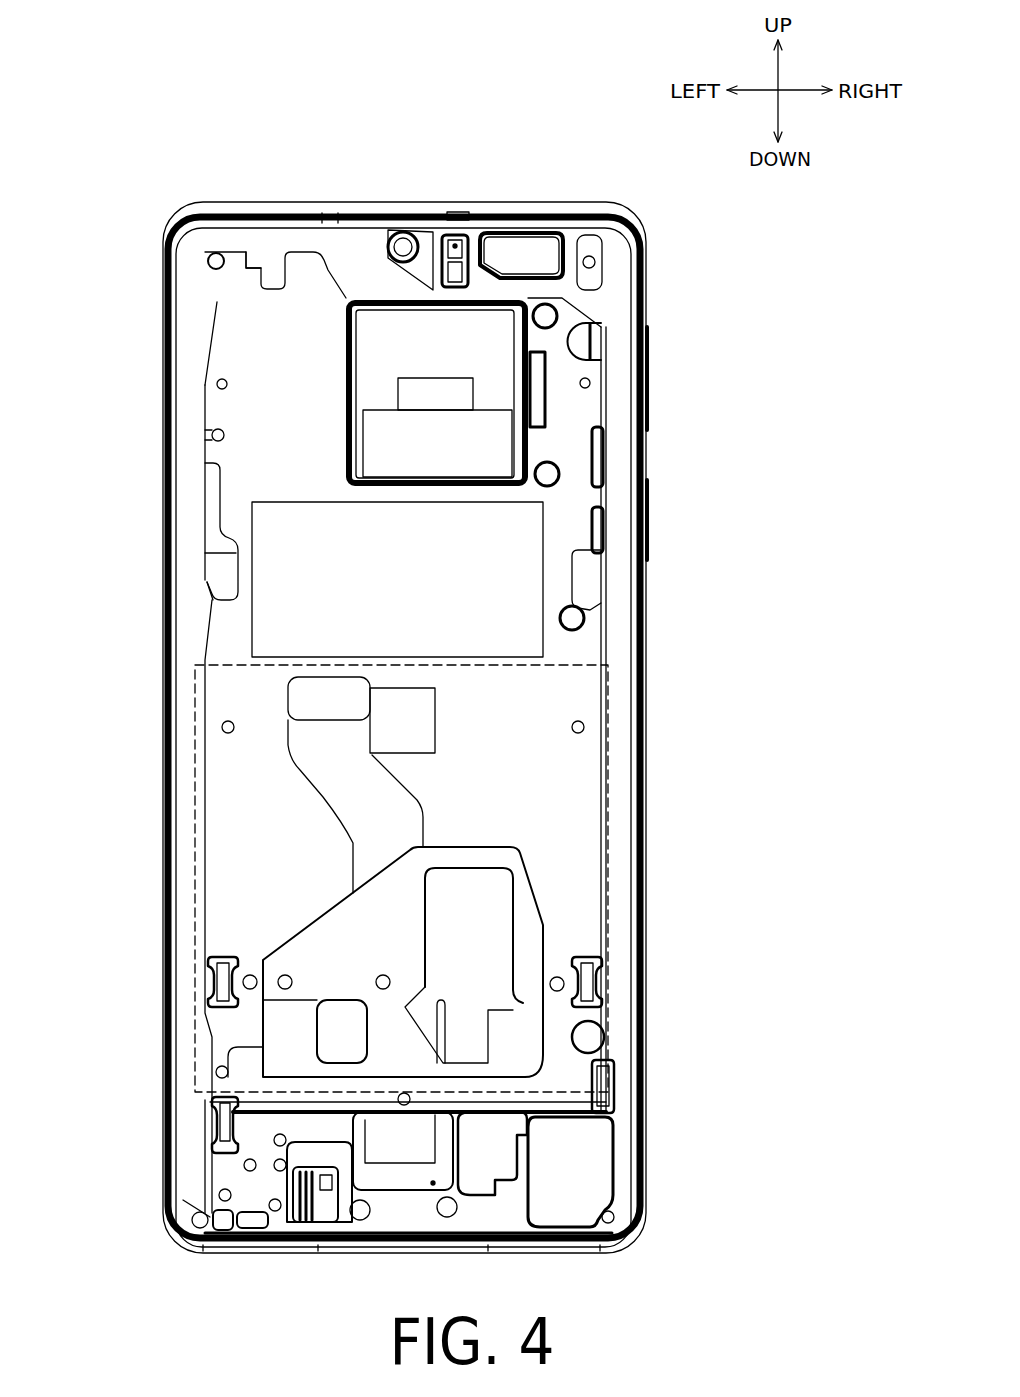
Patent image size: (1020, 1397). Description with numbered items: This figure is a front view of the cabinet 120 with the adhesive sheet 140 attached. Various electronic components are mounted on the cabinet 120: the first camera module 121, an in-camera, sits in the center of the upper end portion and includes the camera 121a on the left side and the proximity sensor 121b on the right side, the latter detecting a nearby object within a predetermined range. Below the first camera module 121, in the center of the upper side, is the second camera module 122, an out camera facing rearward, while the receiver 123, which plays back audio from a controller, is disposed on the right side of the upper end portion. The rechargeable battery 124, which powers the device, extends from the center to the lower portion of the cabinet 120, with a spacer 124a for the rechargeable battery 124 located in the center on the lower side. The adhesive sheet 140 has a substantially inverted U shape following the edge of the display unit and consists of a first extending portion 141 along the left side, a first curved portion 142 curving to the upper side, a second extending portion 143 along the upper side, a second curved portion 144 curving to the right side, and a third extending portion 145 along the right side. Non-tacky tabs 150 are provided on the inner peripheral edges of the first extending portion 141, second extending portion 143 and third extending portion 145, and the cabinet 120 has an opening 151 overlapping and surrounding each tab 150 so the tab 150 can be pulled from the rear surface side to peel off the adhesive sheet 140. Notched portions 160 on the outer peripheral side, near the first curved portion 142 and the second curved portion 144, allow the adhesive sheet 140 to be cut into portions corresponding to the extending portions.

The cabinet 120 is at (149, 115).
The first camera module 121 is at (442, 194).
The camera 121a is at (410, 222).
The proximity sensor 121b is at (511, 228).
The second camera module 122 is at (515, 397).
The receiver 123 is at (538, 246).
The rechargeable battery 124 is at (615, 736).
The spacer 124a is at (534, 934).
The adhesive sheet 140 is at (181, 802).
The first extending portion 141 is at (175, 397).
The first curved portion 142 is at (181, 216).
The second extending portion 143 is at (332, 222).
The second curved portion 144 is at (622, 231).
The third extending portion 145 is at (628, 510).
The tab 150 is at (266, 257).
The opening 151 is at (262, 271).
The notched portion 160 is at (532, 266).